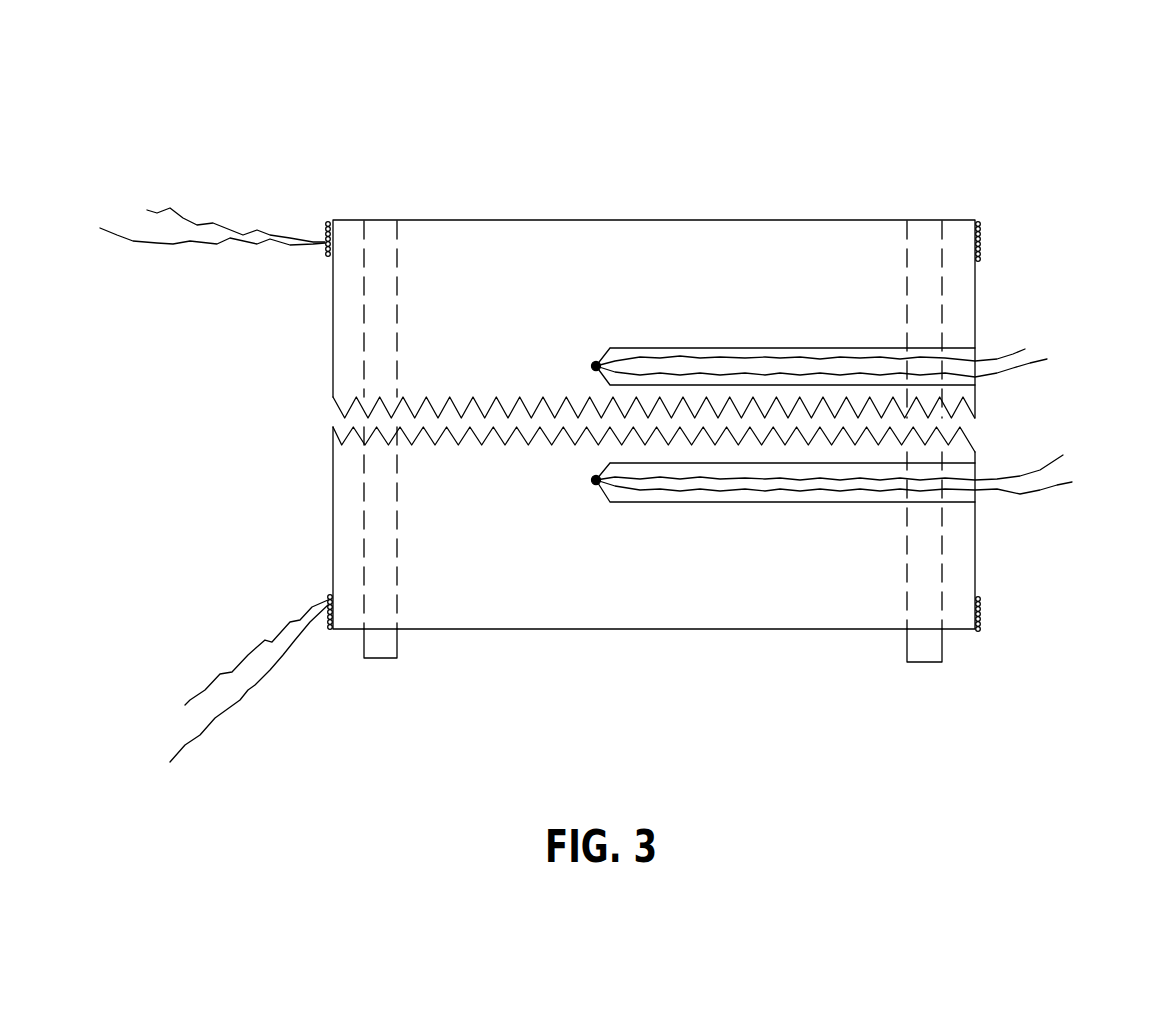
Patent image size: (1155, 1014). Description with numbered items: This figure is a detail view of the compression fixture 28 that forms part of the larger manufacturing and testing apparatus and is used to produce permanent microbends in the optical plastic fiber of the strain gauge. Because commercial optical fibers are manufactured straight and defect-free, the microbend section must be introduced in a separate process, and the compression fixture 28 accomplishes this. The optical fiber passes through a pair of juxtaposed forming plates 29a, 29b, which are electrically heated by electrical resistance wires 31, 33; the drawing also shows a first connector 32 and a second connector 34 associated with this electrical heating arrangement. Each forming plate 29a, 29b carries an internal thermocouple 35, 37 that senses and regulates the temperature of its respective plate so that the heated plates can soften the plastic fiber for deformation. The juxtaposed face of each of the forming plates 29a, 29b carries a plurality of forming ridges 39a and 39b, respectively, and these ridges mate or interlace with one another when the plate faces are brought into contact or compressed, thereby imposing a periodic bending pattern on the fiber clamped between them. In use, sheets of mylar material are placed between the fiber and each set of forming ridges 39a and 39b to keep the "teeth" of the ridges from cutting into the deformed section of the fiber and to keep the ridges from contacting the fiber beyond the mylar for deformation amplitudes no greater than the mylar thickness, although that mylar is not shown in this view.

The compression fixture 28 is at (646, 115).
The forming plate 29a is at (800, 238).
The forming plate 29b is at (507, 630).
The electrical resistance wire 31 is at (183, 213).
The first connector 32 is at (984, 249).
The electrical resistance wire 33 is at (265, 678).
The second connector 34 is at (984, 614).
The internal thermocouple 35 is at (1031, 371).
The internal thermocouple 37 is at (1053, 472).
The forming ridges 39a is at (398, 398).
The forming ridges 39b is at (583, 446).